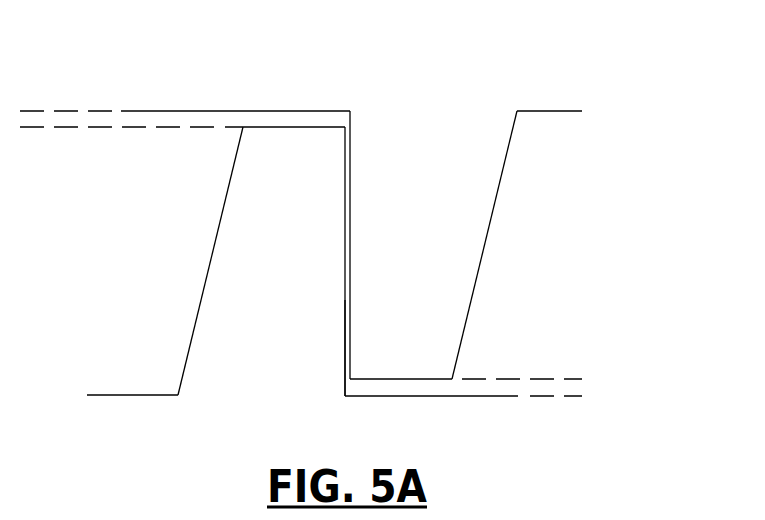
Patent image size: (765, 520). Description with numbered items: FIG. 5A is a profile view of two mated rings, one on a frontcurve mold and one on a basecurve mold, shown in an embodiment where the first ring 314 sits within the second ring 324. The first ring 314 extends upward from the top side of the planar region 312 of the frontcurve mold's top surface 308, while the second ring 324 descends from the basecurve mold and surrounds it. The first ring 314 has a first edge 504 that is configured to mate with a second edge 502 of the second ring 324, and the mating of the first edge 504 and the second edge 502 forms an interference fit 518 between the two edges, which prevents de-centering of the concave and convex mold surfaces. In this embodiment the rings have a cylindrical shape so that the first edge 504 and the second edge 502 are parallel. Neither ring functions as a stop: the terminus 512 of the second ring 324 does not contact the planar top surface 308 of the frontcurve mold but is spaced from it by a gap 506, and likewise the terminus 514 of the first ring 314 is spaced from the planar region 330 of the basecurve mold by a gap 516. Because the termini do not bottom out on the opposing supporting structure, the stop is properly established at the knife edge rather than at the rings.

The top surface 308 is at (430, 393).
The planar region 312 is at (147, 395).
The first ring 314 is at (297, 292).
The second ring 324 is at (445, 228).
The planar region 330 is at (299, 110).
The second edge 502 is at (351, 181).
The first edge 504 is at (345, 240).
The gap 506 is at (568, 388).
The terminus 512 is at (412, 378).
The terminus 514 is at (318, 125).
The gap 516 is at (183, 123).
The interference fit 518 is at (347, 318).